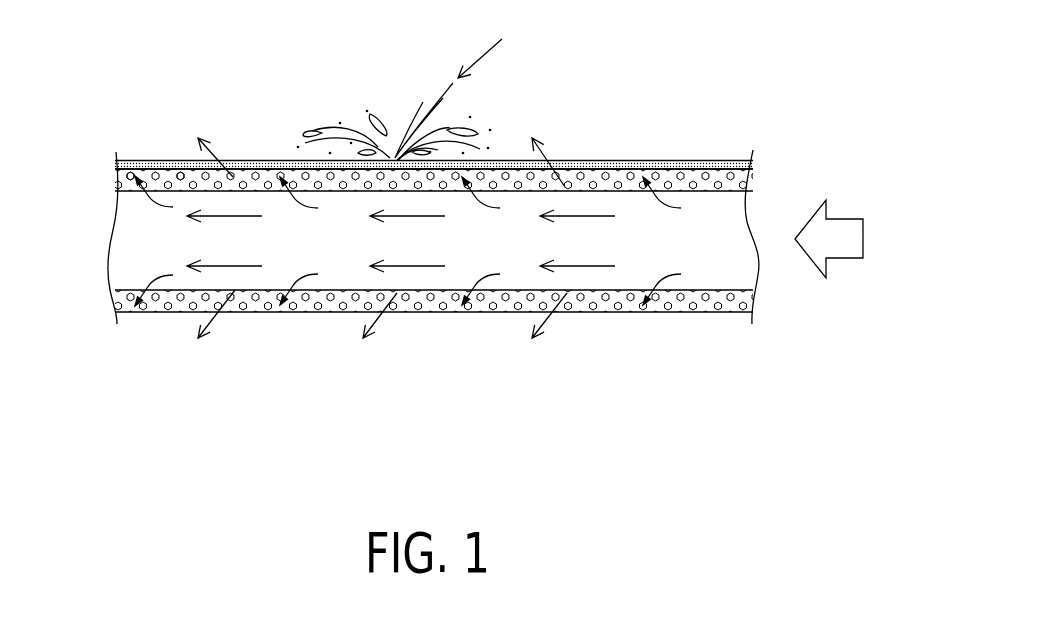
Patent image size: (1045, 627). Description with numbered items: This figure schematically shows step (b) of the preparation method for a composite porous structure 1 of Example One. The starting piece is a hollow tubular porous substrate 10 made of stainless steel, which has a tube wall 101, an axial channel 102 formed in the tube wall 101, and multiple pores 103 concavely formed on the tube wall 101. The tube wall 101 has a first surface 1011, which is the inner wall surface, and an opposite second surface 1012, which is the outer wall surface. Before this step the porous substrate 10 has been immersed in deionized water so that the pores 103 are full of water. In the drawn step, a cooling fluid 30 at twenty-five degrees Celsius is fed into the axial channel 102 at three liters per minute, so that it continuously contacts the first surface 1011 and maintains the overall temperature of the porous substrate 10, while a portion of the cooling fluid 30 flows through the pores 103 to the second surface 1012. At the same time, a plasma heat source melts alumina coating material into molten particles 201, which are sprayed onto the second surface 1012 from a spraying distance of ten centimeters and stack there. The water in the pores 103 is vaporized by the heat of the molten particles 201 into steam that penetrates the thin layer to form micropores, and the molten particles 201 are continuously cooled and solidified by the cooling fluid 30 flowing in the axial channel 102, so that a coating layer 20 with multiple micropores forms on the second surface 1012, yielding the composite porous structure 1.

The composite porous structure 1 is at (319, 428).
The porous substrate 10 is at (613, 322).
The tube wall 101 is at (358, 300).
The first surface 1011 is at (133, 178).
The second surface 1012 is at (183, 168).
The axial channel 102 is at (732, 267).
The pores 103 is at (462, 310).
The coating layer 20 is at (664, 157).
The molten particles 201 is at (477, 129).
The cooling fluid 30 is at (863, 228).